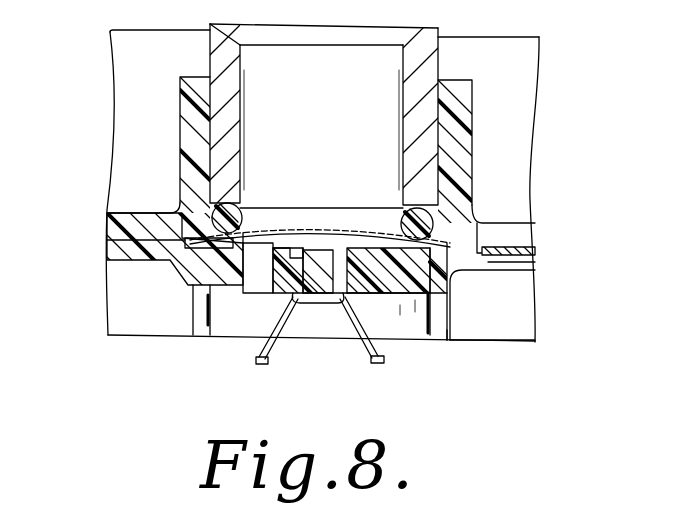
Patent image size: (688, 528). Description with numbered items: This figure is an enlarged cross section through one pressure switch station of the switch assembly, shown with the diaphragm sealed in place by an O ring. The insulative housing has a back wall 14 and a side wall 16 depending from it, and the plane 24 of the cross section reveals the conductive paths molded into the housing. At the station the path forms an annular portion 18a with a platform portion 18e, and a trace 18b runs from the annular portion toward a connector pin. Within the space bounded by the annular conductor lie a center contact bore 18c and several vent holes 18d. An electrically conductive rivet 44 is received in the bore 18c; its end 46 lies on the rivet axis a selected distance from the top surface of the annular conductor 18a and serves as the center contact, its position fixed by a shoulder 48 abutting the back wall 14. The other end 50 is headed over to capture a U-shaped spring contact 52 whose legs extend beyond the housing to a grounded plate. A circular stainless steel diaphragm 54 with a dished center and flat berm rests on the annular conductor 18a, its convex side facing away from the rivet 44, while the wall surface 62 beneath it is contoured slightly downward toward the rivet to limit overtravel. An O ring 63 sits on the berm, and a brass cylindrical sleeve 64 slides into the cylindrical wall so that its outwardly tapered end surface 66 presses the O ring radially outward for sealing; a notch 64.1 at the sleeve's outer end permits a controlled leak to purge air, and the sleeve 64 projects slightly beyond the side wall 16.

The back wall 14 is at (107, 228).
The side wall 16 is at (522, 102).
The annular portion of conductive path 18a is at (112, 245).
The trace 18b is at (514, 153).
The center contact bore 18c is at (330, 300).
The vent holes 18d is at (250, 290).
The platform portion 18e is at (519, 377).
The plane 24 is at (523, 302).
The rivet 44 is at (268, 358).
The end of rivet (contact surface) 46 is at (312, 206).
The shoulder 48 is at (300, 250).
The other end of rivet 50 is at (318, 292).
The spring contact 52 is at (377, 350).
The diaphragm 54 is at (316, 205).
The surface of the wall beneath the diaphragm 62 is at (343, 206).
The O ring 63 is at (183, 204).
The cylindrical sleeve 64 is at (403, 93).
The notch (vent) of sleeve 64.1 is at (327, 27).
The end surface of sleeve 66 is at (183, 178).